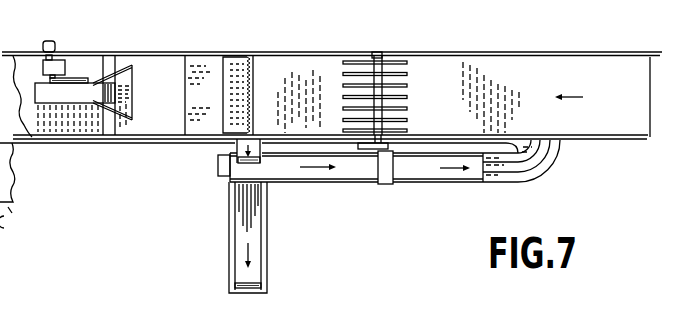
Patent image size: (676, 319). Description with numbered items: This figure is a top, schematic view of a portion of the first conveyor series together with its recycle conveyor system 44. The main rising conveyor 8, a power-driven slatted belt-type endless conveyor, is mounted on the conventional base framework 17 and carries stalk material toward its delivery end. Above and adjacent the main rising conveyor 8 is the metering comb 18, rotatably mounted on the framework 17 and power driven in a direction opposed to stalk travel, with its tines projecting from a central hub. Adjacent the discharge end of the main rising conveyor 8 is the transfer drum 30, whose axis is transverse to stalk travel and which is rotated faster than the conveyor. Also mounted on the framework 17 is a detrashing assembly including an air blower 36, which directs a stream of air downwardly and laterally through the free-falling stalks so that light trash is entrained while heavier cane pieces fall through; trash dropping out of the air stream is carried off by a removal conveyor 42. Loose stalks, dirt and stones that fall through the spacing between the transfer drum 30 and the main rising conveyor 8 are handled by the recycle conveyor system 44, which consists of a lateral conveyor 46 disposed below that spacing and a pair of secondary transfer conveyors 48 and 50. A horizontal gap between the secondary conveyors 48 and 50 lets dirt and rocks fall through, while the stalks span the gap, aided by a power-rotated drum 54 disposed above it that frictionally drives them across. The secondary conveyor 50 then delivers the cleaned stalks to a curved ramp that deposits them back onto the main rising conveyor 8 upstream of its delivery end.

The main rising conveyor 8 is at (503, 68).
The base framework 17 is at (440, 53).
The metering comb 18 is at (399, 52).
The transfer drum 30 is at (244, 51).
The air blower 36 is at (92, 85).
The removal conveyor 42 is at (257, 276).
The recycle conveyor system 44 is at (216, 211).
The lateral conveyor 46 is at (236, 147).
The secondary transfer conveyor 48 is at (333, 180).
The secondary transfer conveyor 50 is at (445, 181).
The power-rotated drum 54 is at (386, 182).